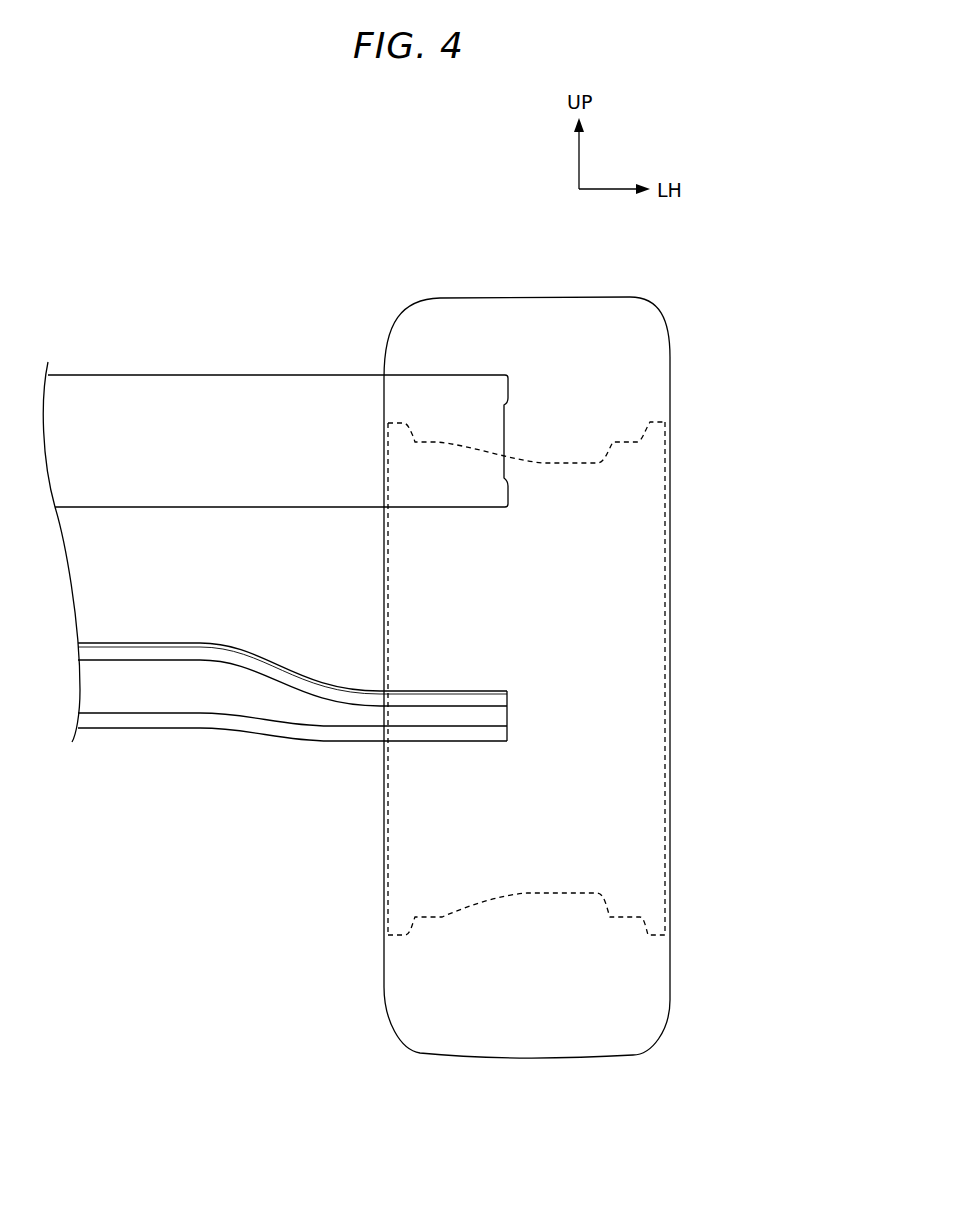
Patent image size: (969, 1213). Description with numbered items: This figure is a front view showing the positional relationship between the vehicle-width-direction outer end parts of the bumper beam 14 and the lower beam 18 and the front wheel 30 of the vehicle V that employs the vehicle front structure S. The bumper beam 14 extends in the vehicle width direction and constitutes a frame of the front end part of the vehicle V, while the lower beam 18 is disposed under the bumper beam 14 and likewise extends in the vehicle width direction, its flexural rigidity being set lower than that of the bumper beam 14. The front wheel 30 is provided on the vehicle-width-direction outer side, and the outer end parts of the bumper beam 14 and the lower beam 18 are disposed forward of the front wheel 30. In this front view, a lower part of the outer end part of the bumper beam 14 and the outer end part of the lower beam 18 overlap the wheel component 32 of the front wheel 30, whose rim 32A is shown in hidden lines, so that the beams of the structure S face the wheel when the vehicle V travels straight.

The bumper beam 14 is at (203, 375).
The lower beam 18 is at (175, 643).
The front wheel 30 is at (480, 300).
The wheel component 32 is at (665, 575).
The rim 32A is at (552, 460).
The vehicle V is at (225, 208).
The vehicle front structure S is at (170, 253).